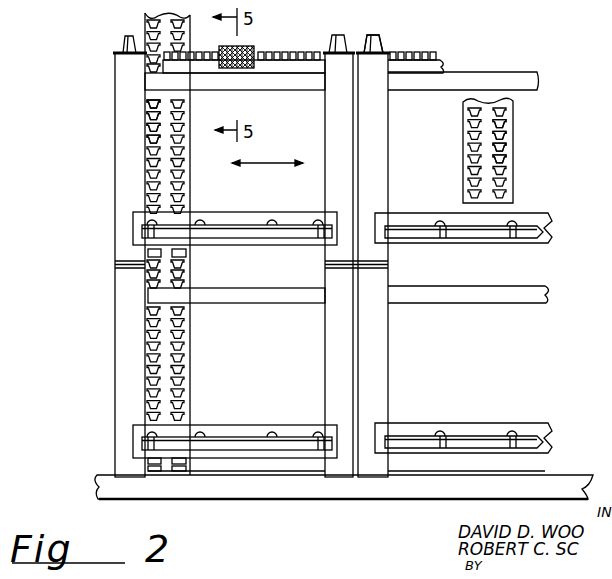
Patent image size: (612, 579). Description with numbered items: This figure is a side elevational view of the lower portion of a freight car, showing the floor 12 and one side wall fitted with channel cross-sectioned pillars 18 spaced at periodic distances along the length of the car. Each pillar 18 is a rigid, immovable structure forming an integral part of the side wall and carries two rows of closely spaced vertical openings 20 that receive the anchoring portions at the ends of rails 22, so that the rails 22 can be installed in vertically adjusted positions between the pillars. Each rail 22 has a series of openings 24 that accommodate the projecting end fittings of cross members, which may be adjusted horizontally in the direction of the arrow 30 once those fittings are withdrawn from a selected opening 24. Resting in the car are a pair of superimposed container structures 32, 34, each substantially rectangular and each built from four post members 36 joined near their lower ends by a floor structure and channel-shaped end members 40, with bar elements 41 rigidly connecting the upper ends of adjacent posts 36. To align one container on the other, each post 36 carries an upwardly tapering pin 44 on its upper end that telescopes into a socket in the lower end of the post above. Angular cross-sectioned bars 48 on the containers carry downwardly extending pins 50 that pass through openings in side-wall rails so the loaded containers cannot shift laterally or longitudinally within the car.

The floor 12 is at (57, 2).
The pillar 18 is at (188, 163).
The vertical opening 20 is at (147, 140).
The rail 22 is at (268, 73).
The opening 24 is at (265, 47).
The arrow 30 is at (267, 174).
The container structure 32 is at (337, 322).
The container structure 34 is at (340, 187).
The post member 36 is at (128, 349).
The channel shaped end member 40 is at (457, 216).
The bar element 41 is at (204, 78).
The upwardly tapering pin 44 is at (378, 44).
The angular cross sectioned bar 48 is at (432, 240).
The pin 50 is at (522, 238).